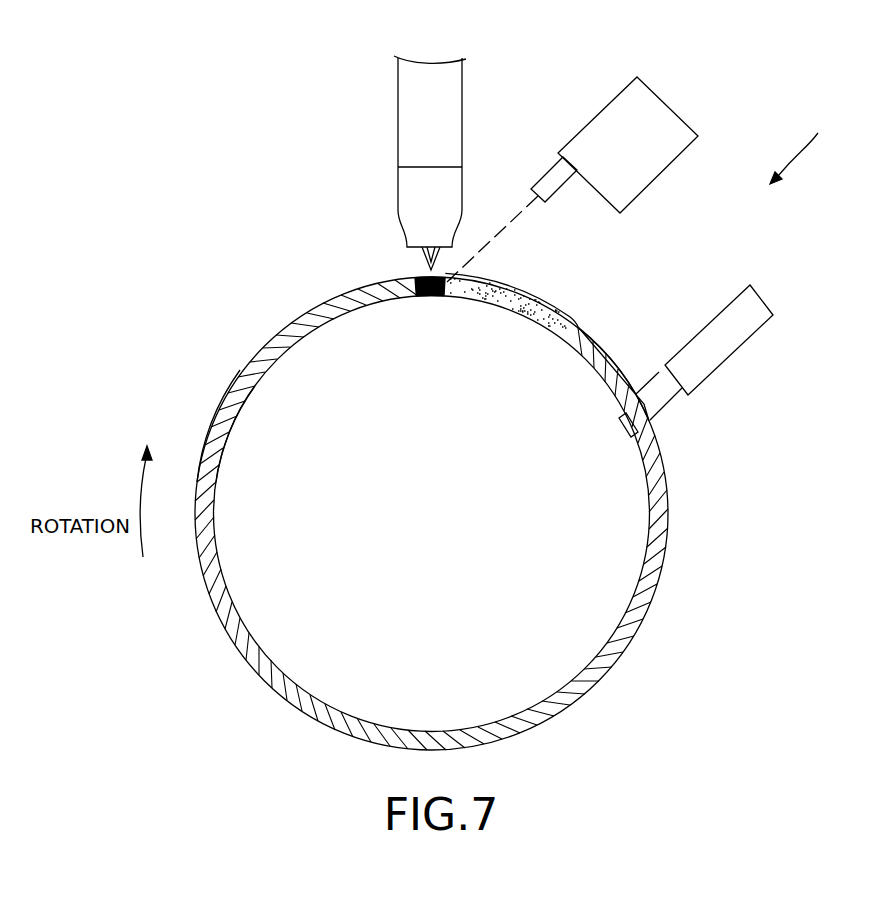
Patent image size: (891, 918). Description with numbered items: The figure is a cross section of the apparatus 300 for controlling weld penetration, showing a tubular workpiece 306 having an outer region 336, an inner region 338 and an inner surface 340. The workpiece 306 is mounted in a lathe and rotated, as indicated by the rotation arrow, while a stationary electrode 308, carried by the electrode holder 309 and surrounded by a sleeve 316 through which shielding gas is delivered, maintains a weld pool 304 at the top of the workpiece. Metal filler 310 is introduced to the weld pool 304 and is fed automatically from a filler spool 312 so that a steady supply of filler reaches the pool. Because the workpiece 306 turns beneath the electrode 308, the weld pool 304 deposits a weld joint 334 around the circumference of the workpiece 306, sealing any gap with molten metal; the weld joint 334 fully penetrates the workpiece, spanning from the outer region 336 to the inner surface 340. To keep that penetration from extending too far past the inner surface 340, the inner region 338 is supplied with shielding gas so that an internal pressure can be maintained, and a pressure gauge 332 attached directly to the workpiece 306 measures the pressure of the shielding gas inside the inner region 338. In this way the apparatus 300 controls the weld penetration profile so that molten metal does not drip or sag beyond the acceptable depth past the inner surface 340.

The apparatus 300 is at (808, 146).
The weld pool 304 is at (427, 294).
The workpiece 306 is at (245, 378).
The electrode 308 is at (422, 248).
The electrode holder 309 is at (405, 97).
The metal filler 310 is at (515, 213).
The filler spool 312 is at (610, 100).
The sleeve 316 is at (405, 197).
The pressure gauge 332 is at (757, 317).
The weld joint 334 is at (517, 293).
The outer region 336 is at (220, 413).
The inner region 338 is at (318, 565).
The inner surface 340 is at (237, 417).